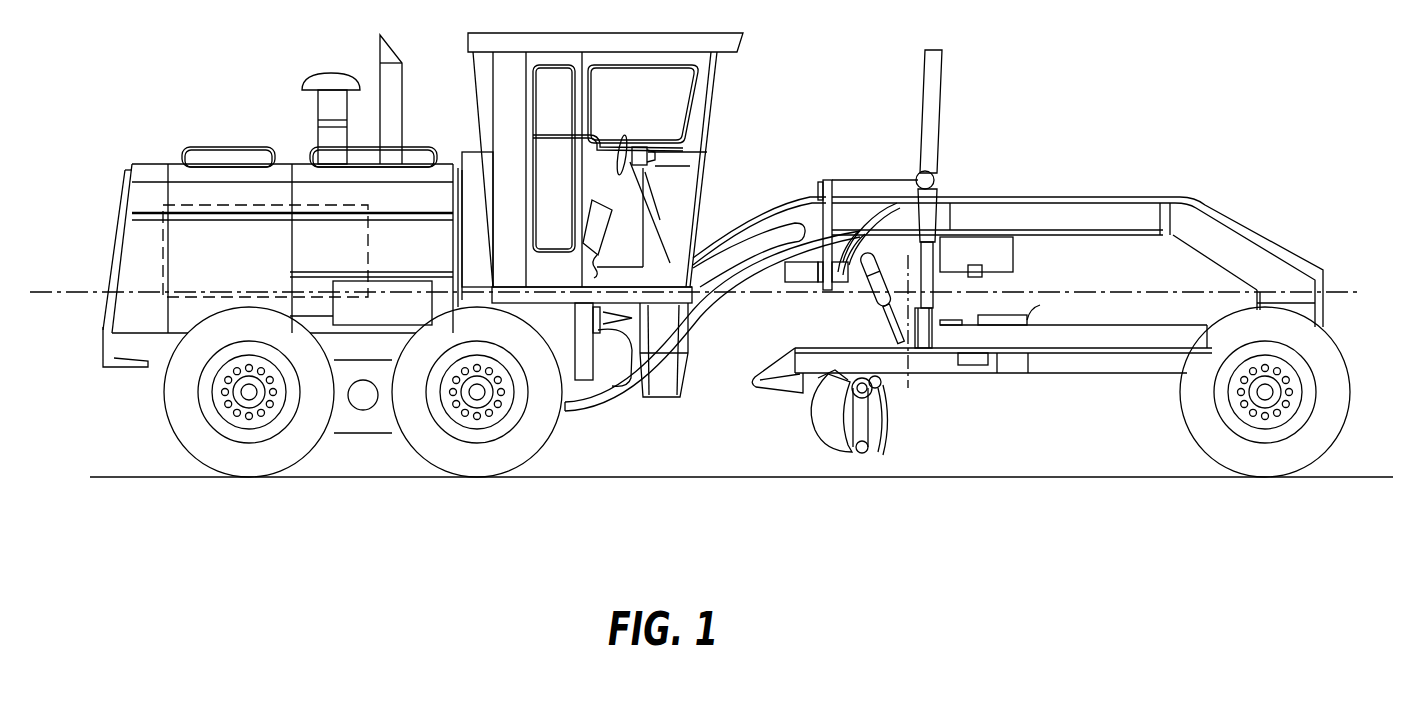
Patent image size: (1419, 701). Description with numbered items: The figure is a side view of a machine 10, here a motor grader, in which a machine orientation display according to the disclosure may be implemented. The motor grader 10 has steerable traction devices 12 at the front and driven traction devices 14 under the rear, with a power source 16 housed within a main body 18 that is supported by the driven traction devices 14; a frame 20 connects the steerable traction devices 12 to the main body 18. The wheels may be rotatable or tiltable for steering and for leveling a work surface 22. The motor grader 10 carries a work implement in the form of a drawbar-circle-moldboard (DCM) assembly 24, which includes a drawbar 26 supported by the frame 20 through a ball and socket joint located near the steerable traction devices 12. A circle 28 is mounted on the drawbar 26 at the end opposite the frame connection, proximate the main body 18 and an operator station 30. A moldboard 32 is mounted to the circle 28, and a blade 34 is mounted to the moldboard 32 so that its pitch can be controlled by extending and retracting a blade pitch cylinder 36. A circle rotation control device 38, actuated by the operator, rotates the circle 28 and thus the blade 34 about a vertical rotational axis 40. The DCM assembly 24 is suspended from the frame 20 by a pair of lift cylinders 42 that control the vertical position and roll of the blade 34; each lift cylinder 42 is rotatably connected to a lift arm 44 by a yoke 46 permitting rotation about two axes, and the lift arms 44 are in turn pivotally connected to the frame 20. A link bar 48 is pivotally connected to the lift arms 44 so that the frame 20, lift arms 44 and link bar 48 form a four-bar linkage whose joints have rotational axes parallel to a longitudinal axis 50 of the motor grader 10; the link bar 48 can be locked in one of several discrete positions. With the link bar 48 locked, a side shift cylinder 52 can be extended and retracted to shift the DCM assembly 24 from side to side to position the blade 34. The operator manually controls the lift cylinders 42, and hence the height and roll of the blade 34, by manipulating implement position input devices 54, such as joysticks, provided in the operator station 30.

The machine 10 is at (1139, 57).
The steerable traction devices 12 is at (1342, 388).
The driven traction devices 14 is at (190, 440).
The power source 16 is at (185, 205).
The main body 18 is at (258, 172).
The frame 20 is at (1147, 207).
The work surface 22 is at (1348, 472).
The drawbar-circle-moldboard (DCM) assembly 24 is at (962, 393).
The drawbar 26 is at (1107, 338).
The circle 28 is at (1015, 365).
The operator station 30 is at (716, 82).
The moldboard 32 is at (823, 425).
The blade 34 is at (865, 437).
The blade pitch cylinder 36 is at (780, 390).
The circle rotation control device 38 is at (1032, 317).
The vertical rotational axis 40 is at (907, 286).
The lift cylinders 42 is at (935, 82).
The lift arm 44 is at (870, 213).
The yoke 46 is at (935, 178).
The link bar 48 is at (837, 280).
The longitudinal axis 50 is at (1340, 290).
The side shift cylinder 52 is at (868, 283).
The implement position input devices 54 is at (652, 153).